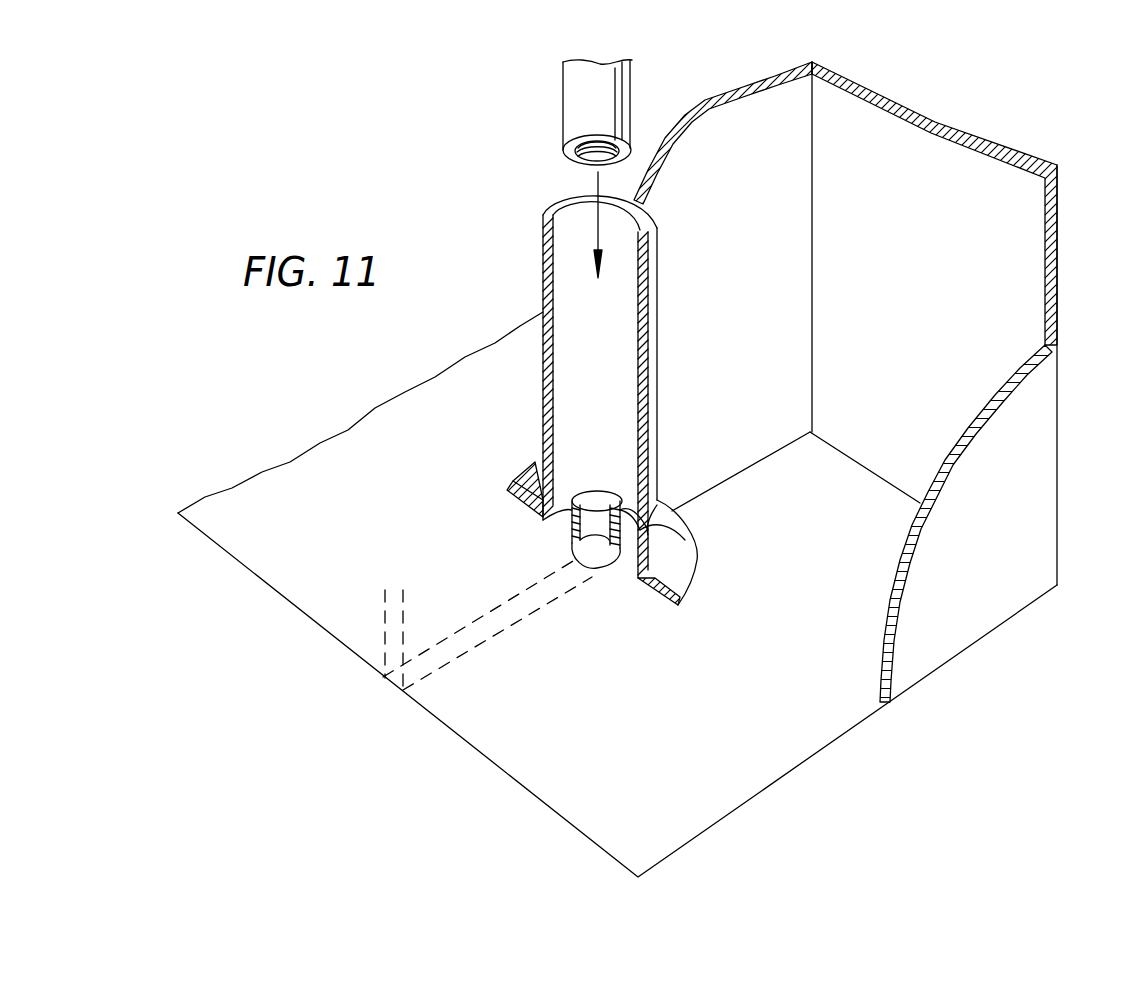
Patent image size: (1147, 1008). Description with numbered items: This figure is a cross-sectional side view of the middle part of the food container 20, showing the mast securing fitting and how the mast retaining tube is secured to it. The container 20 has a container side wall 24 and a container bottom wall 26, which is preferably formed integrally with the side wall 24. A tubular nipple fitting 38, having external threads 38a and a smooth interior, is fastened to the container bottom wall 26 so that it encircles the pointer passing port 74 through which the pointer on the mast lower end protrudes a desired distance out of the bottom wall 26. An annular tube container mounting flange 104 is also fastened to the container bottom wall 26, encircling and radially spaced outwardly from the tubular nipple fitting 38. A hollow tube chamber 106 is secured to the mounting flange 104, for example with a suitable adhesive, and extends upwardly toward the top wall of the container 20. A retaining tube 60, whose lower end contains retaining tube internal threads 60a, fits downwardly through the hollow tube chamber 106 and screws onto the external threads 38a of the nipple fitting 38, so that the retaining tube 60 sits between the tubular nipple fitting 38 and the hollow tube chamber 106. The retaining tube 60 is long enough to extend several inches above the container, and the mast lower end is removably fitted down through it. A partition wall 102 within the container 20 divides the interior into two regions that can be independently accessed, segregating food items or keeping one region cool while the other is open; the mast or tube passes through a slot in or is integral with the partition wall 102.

The food container 20 is at (1027, 128).
The container side wall 24 is at (912, 272).
The container bottom wall 26 is at (374, 552).
The partition wall 102 is at (735, 180).
The annular tube container mounting flange 104 is at (698, 515).
The hollow tube chamber 106 is at (655, 392).
The retaining tube 60 is at (570, 100).
The retaining tube internal threads 60a is at (580, 160).
The tubular nipple fitting 38 is at (596, 490).
The external threads 38a is at (572, 535).
The pointer passing port 74 is at (600, 572).